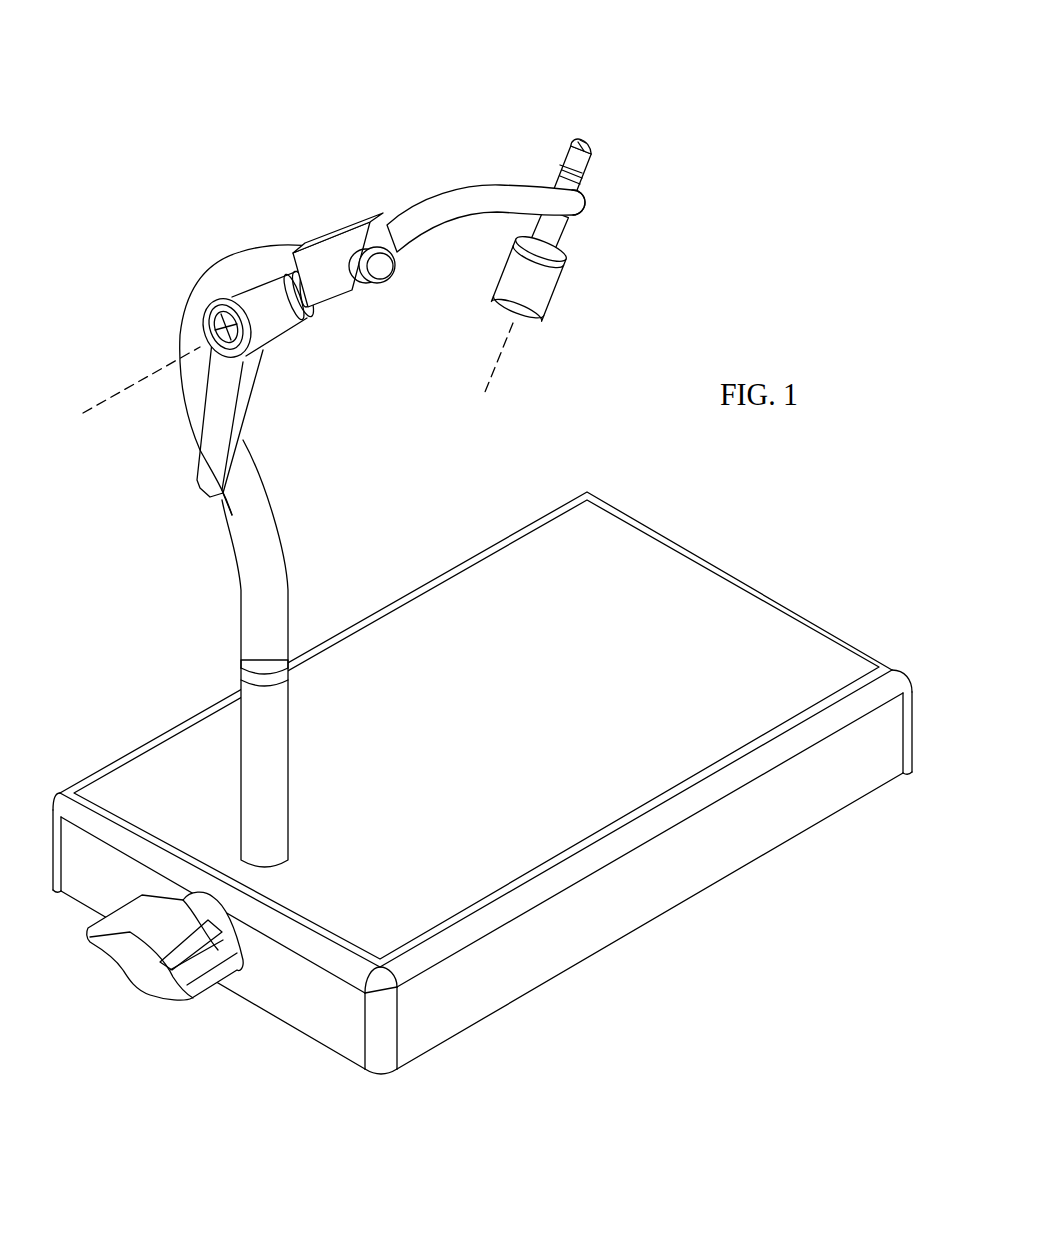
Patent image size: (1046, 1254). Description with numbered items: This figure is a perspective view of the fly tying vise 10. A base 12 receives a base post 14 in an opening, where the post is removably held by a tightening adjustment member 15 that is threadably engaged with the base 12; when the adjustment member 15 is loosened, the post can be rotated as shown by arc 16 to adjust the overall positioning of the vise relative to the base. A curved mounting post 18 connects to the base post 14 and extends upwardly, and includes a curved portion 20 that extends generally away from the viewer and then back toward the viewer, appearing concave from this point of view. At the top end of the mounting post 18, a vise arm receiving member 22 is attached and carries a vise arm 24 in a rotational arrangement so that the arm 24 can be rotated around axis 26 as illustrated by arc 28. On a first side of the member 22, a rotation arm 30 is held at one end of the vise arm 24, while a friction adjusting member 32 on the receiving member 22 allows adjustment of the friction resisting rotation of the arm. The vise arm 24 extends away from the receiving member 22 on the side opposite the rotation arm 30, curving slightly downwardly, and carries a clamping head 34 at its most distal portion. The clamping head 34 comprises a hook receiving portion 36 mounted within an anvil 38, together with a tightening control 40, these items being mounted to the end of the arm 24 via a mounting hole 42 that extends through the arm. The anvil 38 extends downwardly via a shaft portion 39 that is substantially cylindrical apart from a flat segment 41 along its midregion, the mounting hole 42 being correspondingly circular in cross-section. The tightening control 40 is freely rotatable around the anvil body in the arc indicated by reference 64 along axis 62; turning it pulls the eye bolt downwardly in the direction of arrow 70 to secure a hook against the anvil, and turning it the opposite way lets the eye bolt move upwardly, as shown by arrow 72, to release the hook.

The fly tying vise 10 is at (161, 654).
The base 12 is at (563, 960).
The base post 14 is at (250, 773).
The tightening adjustment member 15 is at (160, 983).
The arc 16 is at (280, 737).
The curved mounting post 18 is at (293, 620).
The curved portion 20 is at (170, 500).
The vise arm receiving member 22 is at (348, 237).
The vise arm 24 is at (443, 202).
The axis 26 is at (103, 380).
The arc 28 is at (110, 415).
The rotation arm 30 is at (240, 400).
The friction adjusting member 32 is at (387, 270).
The clamping head 34 is at (630, 163).
The hook receiving portion 36 is at (590, 137).
The anvil 38 is at (590, 163).
The shaft portion 39 is at (567, 232).
The tightening control 40 is at (553, 292).
The flat segment 41 is at (558, 184).
The mounting hole 42 is at (578, 218).
The axis 62 is at (510, 337).
The arc 64 is at (478, 352).
The arrow 70 is at (478, 412).
The arrow 72 is at (585, 132).